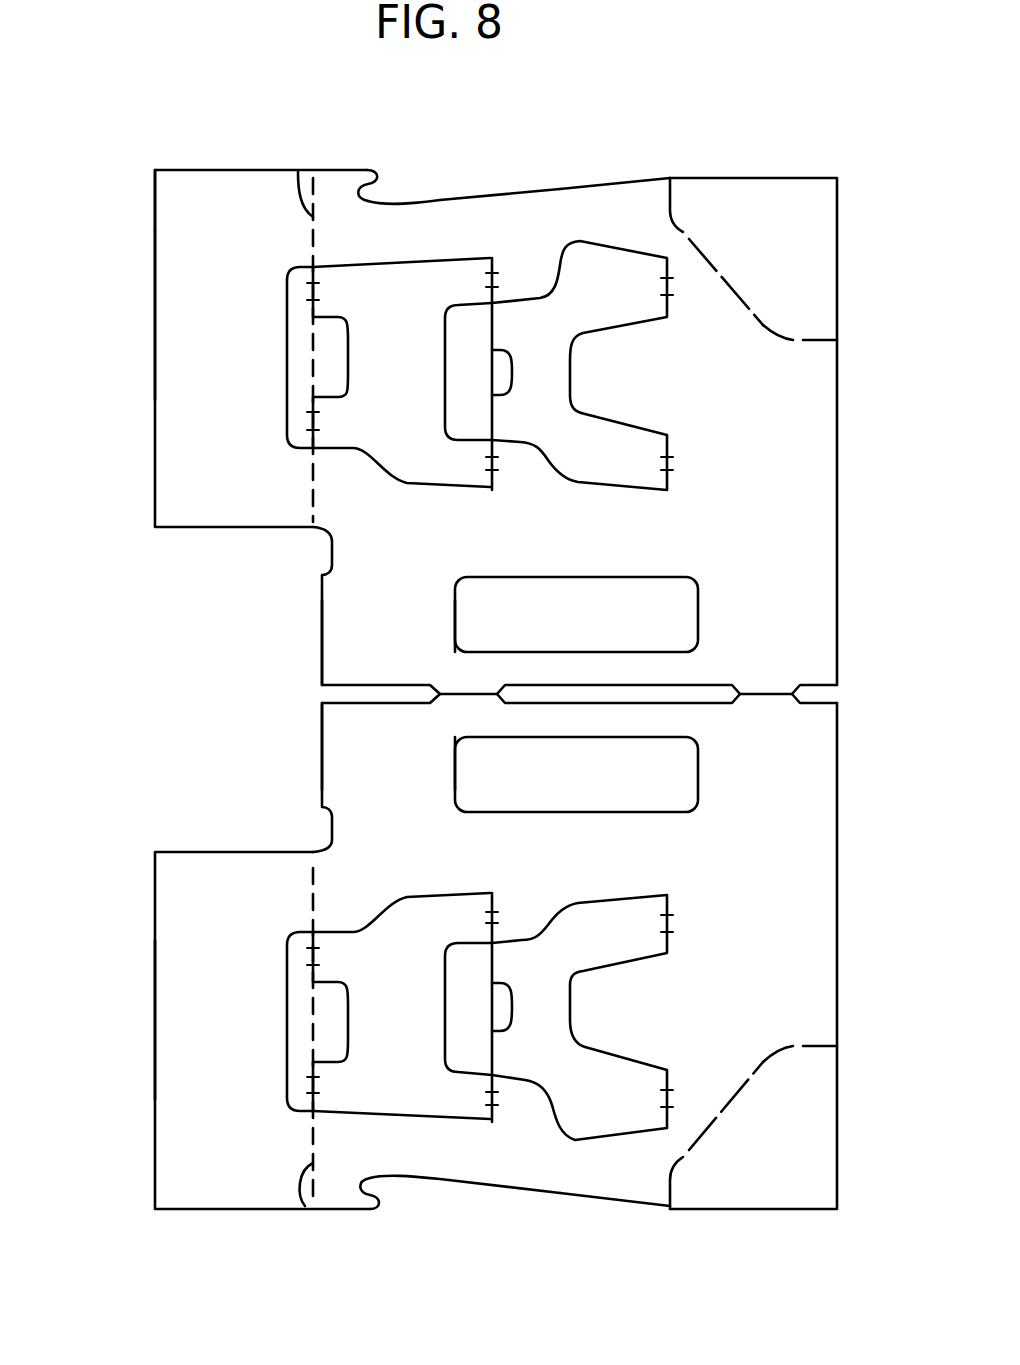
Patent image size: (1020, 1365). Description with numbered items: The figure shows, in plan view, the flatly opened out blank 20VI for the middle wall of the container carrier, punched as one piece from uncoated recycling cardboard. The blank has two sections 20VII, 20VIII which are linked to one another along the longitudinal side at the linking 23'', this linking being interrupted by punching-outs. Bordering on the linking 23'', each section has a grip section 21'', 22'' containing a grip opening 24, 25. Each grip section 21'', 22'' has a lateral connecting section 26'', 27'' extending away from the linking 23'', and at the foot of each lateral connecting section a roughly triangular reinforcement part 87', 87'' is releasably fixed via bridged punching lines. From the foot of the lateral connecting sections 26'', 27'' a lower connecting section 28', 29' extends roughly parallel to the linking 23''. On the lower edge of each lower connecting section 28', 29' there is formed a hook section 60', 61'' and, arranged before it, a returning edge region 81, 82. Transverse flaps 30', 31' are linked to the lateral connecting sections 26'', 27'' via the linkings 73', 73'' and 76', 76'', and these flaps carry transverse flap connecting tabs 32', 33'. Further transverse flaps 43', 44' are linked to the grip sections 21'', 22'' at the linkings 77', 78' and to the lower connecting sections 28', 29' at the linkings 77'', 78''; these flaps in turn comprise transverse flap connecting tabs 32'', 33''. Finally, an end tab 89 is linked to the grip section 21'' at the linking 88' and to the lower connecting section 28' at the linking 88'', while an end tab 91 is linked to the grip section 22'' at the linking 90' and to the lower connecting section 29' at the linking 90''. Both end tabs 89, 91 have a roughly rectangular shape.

The blank 20VI is at (148, 138).
The section 20VII is at (166, 290).
The section 20VIII is at (166, 1002).
The grip section 21'' is at (557, 636).
The grip section 22'' is at (557, 750).
The linking 23'' is at (666, 668).
The grip opening 24 is at (470, 608).
The grip opening 25 is at (470, 779).
The lateral connecting section 26'' is at (753, 431).
The lateral connecting section 27'' is at (753, 956).
The lower connecting section 28' is at (573, 212).
The lower connecting section 29' is at (615, 1175).
The transverse flap 30' is at (579, 365).
The transverse flap 31' is at (579, 1017).
The transverse flap connecting tab 32' is at (478, 374).
The transverse flap connecting tab 32'' is at (323, 357).
The transverse flap connecting tab 33' is at (478, 1007).
The transverse flap connecting tab 33'' is at (322, 1021).
The transverse flap 43' is at (388, 372).
The transverse flap 44' is at (388, 1006).
The hook section 60' is at (351, 157).
The hook section 61'' is at (354, 1222).
The linking 73' is at (697, 478).
The linking 73'' is at (695, 306).
The linking 76' is at (697, 904).
The linking 76'' is at (694, 1076).
The linking 77' is at (520, 482).
The linking 77'' is at (455, 249).
The linking 78' is at (521, 891).
The linking 78'' is at (465, 1127).
The returning edge region 81 is at (437, 200).
The returning edge region 82 is at (432, 1180).
The reinforcement part 87' is at (753, 259).
The reinforcement part 87'' is at (753, 1127).
The linking 88' is at (283, 350).
The linking 88'' is at (281, 166).
The end tab 89 is at (240, 384).
The linking 90' is at (281, 1032).
The linking 90'' is at (280, 1212).
The end tab 91 is at (234, 1046).